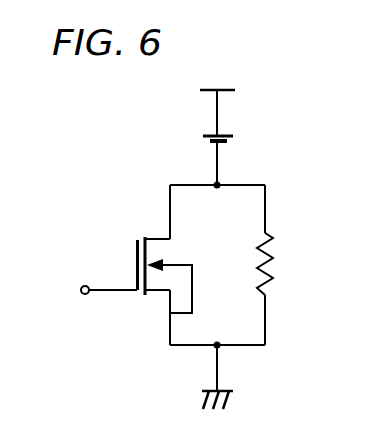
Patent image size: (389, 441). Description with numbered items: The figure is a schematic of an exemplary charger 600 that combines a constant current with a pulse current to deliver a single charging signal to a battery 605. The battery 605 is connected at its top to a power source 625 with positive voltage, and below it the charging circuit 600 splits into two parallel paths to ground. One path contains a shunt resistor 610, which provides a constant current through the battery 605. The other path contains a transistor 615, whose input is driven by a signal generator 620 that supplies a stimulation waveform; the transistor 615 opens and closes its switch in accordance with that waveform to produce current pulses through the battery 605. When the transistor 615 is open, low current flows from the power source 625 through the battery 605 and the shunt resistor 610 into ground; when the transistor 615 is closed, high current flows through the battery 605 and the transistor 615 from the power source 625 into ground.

The charger 600 is at (137, 146).
The battery 605 is at (268, 138).
The shunt resistor 610 is at (312, 262).
The transistor 615 is at (207, 288).
The signal generator 620 is at (82, 287).
The power source 625 is at (242, 75).